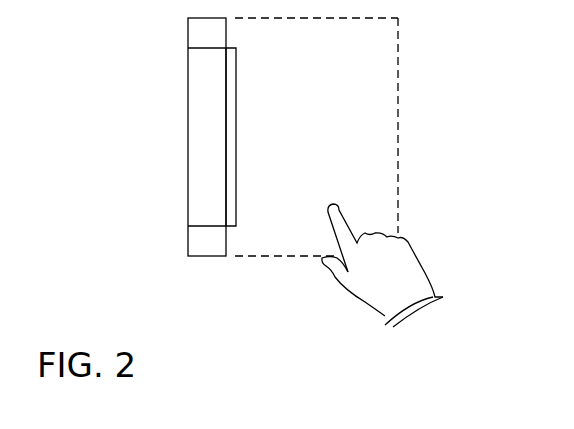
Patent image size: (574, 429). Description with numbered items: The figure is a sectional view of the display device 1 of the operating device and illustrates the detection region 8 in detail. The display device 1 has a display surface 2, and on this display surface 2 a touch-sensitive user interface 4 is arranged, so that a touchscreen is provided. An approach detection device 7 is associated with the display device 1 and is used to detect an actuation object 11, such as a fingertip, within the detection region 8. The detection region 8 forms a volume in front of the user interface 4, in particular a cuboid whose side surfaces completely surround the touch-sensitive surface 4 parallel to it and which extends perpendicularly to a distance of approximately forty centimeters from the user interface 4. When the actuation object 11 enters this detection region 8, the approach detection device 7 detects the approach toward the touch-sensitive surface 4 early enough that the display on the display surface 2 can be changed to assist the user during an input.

The display device 1 is at (202, 128).
The display surface 2 is at (227, 197).
The user interface 4 is at (236, 77).
The approach detection device 7 is at (202, 34).
The detection region 8 is at (339, 148).
The actuation object 11 is at (335, 218).